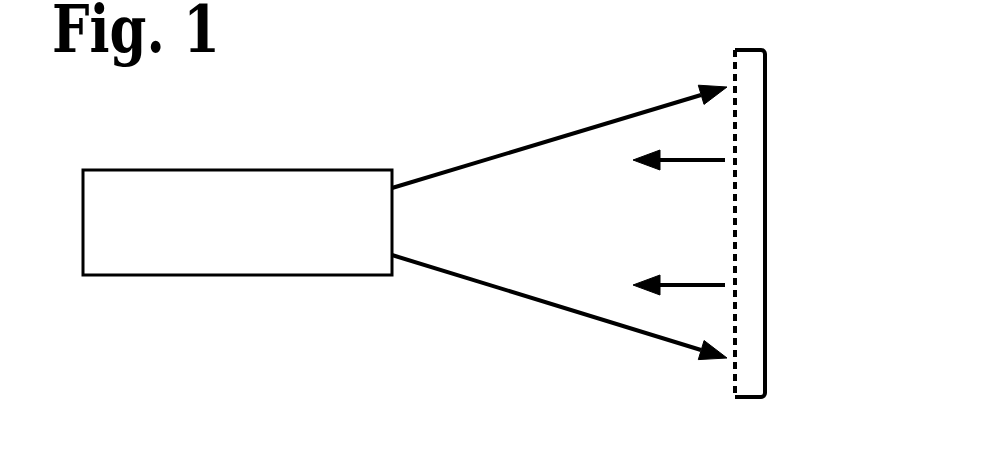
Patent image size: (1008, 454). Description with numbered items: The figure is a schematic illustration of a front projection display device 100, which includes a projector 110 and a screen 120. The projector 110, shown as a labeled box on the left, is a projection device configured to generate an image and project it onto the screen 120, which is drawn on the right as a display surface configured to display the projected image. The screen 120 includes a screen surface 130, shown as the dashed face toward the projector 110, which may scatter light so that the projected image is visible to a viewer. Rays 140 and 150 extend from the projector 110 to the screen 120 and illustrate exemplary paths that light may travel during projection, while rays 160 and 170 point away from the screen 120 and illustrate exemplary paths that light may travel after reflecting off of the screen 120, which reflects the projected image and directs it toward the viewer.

The front projection display device 100 is at (821, 74).
The projector 110 is at (315, 170).
The screen 120 is at (735, 213).
The screen surface 130 is at (735, 68).
The ray 140 is at (532, 142).
The ray 150 is at (533, 300).
The ray 160 is at (683, 165).
The ray 170 is at (683, 282).